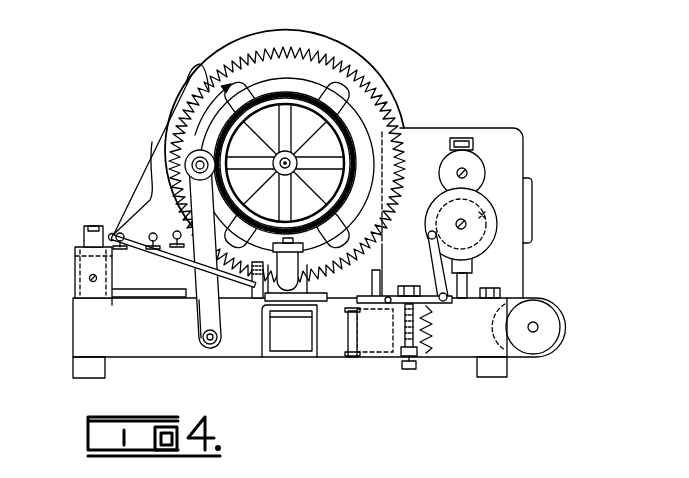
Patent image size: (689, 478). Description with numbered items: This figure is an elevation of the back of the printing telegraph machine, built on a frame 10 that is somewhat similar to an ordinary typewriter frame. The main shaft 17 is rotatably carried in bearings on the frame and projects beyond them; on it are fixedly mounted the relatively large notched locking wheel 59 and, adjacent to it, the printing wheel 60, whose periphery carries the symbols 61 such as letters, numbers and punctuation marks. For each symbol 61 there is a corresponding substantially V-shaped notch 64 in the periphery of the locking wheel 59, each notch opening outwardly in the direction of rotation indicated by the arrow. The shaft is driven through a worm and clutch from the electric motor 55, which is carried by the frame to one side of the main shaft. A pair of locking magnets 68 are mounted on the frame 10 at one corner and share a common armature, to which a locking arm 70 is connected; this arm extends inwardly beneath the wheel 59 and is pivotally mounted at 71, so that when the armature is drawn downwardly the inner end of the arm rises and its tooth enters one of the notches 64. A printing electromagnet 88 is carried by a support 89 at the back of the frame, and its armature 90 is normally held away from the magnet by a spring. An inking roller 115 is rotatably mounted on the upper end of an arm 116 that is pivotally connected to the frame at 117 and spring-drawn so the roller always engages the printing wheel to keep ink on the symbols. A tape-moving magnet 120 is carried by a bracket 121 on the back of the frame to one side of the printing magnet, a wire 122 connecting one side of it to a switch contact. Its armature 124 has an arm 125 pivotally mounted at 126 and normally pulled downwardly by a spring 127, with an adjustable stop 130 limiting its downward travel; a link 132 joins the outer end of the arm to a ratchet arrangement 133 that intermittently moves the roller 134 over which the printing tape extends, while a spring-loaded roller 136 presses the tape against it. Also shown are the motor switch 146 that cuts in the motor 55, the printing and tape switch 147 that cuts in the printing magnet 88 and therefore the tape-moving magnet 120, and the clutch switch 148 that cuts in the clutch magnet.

The frame 10 is at (73, 343).
The main shaft 17 is at (373, 147).
The electric motor 55 is at (510, 148).
The notched locking wheel 59 is at (172, 108).
The printing wheel 60 is at (313, 112).
The symbols 61 is at (343, 120).
The notch 64 is at (186, 66).
The locking magnets 68 is at (75, 278).
The locking arm 70 is at (152, 292).
The pivot of locking arm 71 is at (112, 232).
The printing electromagnet 88 is at (280, 342).
The support 89 is at (262, 345).
The armature 90 is at (268, 296).
The inking roller 115 is at (188, 160).
The arm 116 is at (202, 312).
The pivot of inking roller arm 117 is at (210, 344).
The tape-moving magnet 120 is at (349, 338).
The bracket 121 is at (373, 340).
The wire 122 is at (322, 358).
The armature 124 is at (376, 270).
The arm 125 is at (442, 305).
The pivot of arm 126 is at (449, 299).
The spring 127 is at (436, 340).
The adjustable stop 130 is at (413, 335).
The link 132 is at (432, 272).
The ratchet arrangement 133 is at (470, 224).
The roller 134 is at (488, 214).
The spring-loaded roller 136 is at (475, 178).
The motor switch 146 is at (118, 296).
The printing and tape switch 147 is at (130, 292).
The clutch switch 148 is at (174, 232).